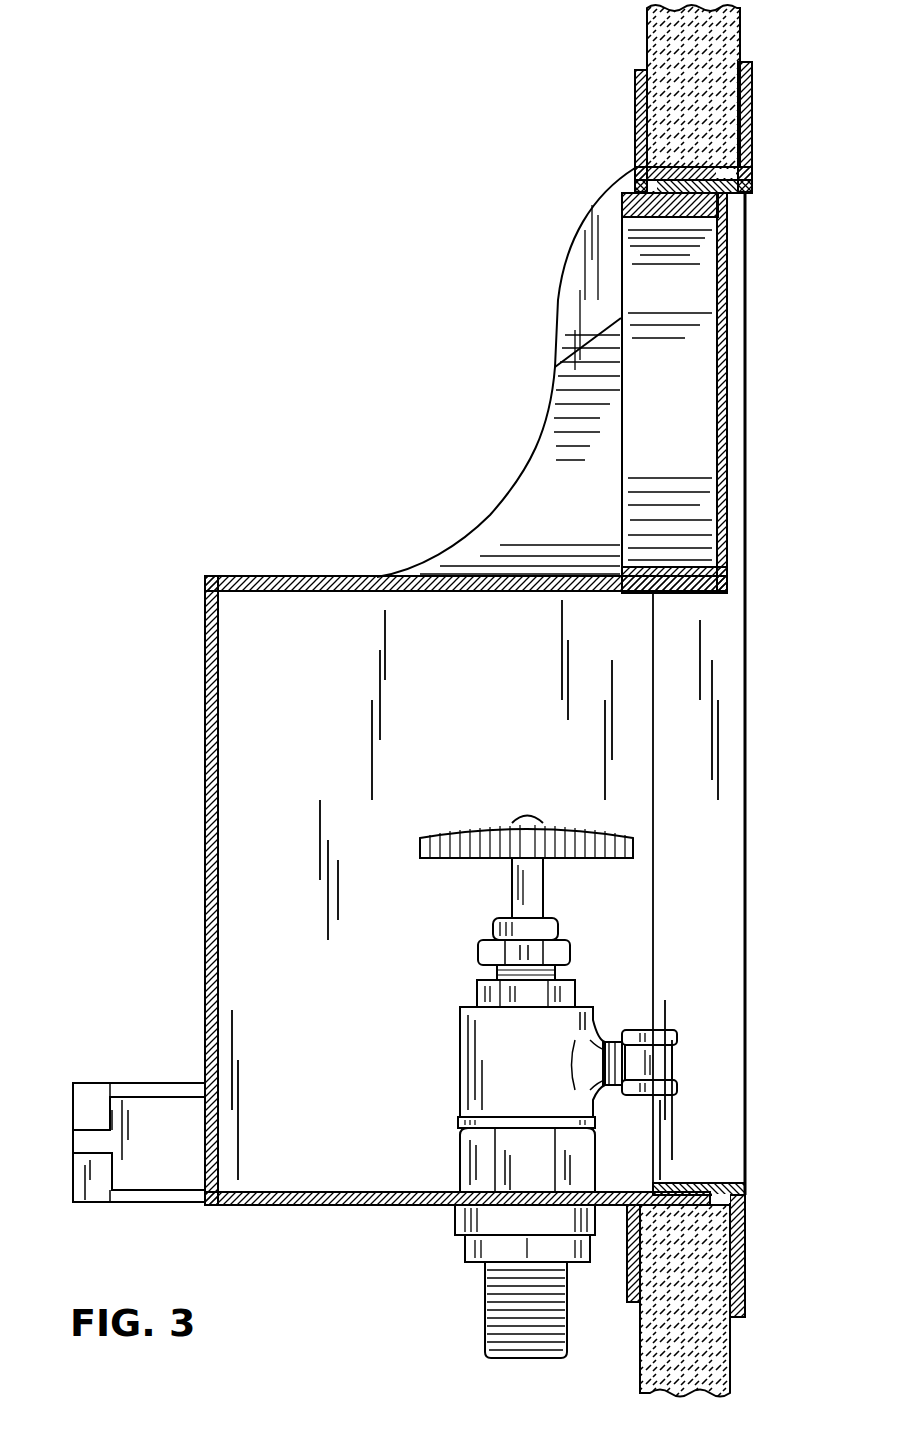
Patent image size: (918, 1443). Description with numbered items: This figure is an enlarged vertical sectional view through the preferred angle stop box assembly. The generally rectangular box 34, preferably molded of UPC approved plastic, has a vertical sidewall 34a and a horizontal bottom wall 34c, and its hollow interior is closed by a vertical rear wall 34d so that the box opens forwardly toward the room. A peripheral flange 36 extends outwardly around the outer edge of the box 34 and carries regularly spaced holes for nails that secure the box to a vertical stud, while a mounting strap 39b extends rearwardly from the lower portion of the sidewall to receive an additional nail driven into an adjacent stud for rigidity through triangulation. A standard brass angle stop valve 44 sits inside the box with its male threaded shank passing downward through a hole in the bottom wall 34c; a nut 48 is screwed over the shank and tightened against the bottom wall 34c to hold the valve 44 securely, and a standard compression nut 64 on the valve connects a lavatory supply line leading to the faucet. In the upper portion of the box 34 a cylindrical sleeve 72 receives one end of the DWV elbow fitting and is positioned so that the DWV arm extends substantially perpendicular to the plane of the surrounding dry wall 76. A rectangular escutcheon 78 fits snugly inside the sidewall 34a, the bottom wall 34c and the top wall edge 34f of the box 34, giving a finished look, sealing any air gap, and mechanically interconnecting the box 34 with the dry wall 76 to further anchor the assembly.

The box 34 is at (206, 722).
The sidewall 34a is at (505, 716).
The bottom wall 34c is at (307, 1190).
The rear wall 34d is at (219, 670).
The top wall edge 34f is at (740, 165).
The peripheral flange 36 is at (635, 100).
The mounting strap 39b is at (92, 1083).
The angle stop valve 44 is at (460, 1048).
The nut 48 is at (460, 1248).
The compression nut 64 is at (677, 1050).
The cylindrical sleeve 72 is at (663, 230).
The dry wall 76 is at (668, 37).
The escutcheon 78 is at (745, 1283).